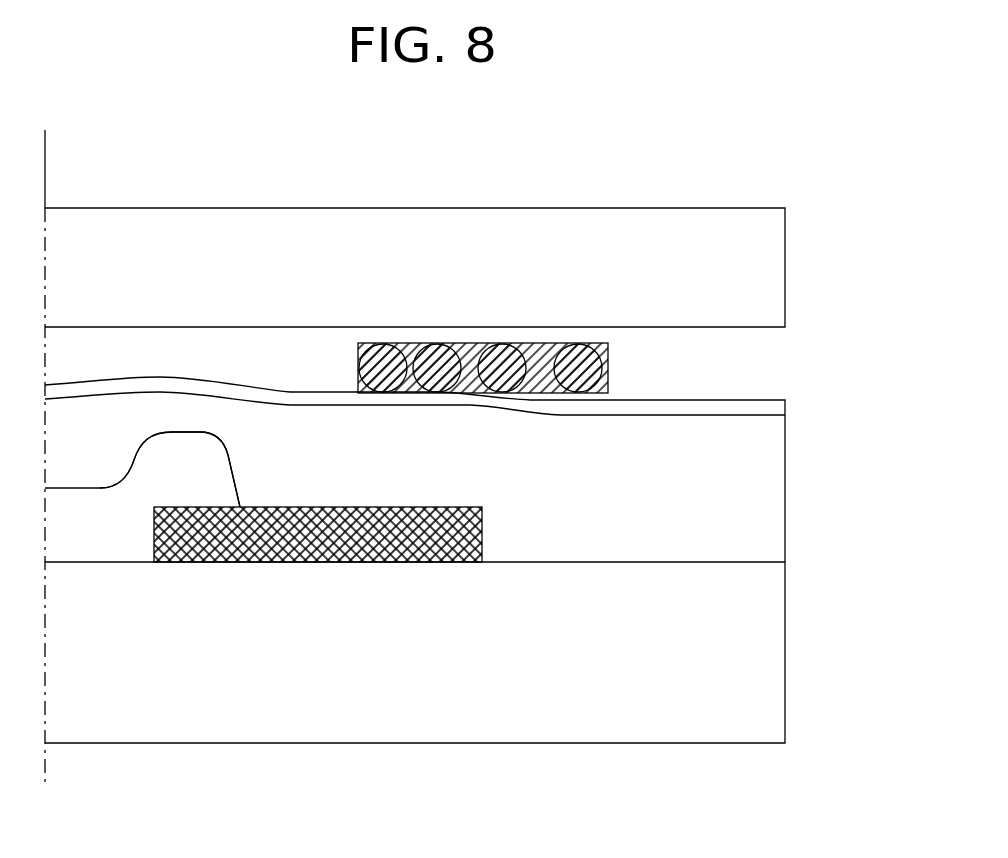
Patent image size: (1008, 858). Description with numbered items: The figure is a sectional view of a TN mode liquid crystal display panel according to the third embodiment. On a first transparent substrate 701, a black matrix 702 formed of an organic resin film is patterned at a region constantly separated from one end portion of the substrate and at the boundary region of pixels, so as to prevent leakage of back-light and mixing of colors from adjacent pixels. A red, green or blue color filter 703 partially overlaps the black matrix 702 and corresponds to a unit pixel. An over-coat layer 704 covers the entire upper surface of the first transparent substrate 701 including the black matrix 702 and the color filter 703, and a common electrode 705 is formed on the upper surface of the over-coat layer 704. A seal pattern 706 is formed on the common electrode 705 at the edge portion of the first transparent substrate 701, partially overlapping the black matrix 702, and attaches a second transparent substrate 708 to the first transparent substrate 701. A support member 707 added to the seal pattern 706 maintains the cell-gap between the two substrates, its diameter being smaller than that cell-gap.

The first transparent substrate 701 is at (765, 690).
The black matrix 702 is at (300, 533).
The color filter 703 is at (116, 526).
The over-coat layer 704 is at (760, 492).
The common electrode 705 is at (773, 407).
The seal pattern 706 is at (608, 391).
The support member 707 is at (608, 354).
The second transparent substrate 708 is at (760, 270).